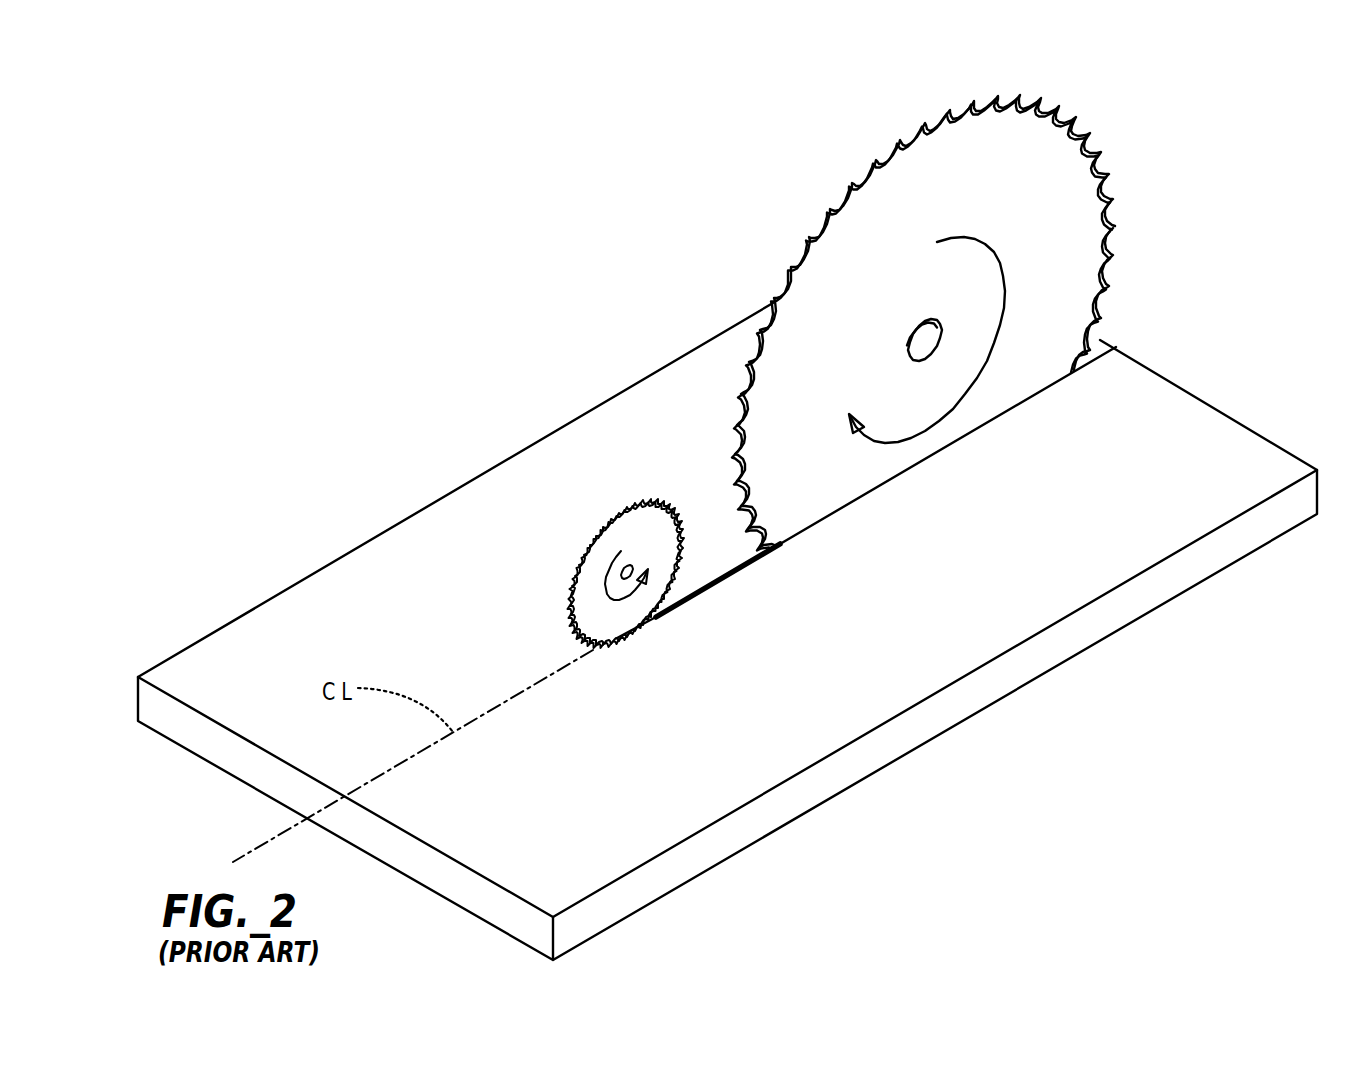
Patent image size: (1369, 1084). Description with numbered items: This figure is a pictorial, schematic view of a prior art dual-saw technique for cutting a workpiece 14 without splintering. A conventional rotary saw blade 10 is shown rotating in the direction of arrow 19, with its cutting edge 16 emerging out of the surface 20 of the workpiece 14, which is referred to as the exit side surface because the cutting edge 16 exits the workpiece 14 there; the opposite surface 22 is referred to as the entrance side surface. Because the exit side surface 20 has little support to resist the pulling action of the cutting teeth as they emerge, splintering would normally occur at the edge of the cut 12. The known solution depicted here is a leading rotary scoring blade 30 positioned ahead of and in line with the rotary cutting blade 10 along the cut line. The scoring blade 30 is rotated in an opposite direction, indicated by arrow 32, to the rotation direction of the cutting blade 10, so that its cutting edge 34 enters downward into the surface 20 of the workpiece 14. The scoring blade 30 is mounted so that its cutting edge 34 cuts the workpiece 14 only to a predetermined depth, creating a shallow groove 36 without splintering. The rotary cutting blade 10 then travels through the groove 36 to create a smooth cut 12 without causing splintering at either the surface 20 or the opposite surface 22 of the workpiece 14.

The rotary saw blade 10 is at (959, 331).
The cut 12 is at (1112, 344).
The workpiece 14 is at (1203, 420).
The cutting edge 16 is at (868, 161).
The arrow 19 is at (1005, 255).
The surface 20 is at (1050, 505).
The opposite surface 22 is at (1173, 603).
The rotary scoring blade 30 is at (603, 581).
The arrow 32 is at (607, 593).
The cutting edge 34 is at (618, 641).
The groove 36 is at (740, 575).